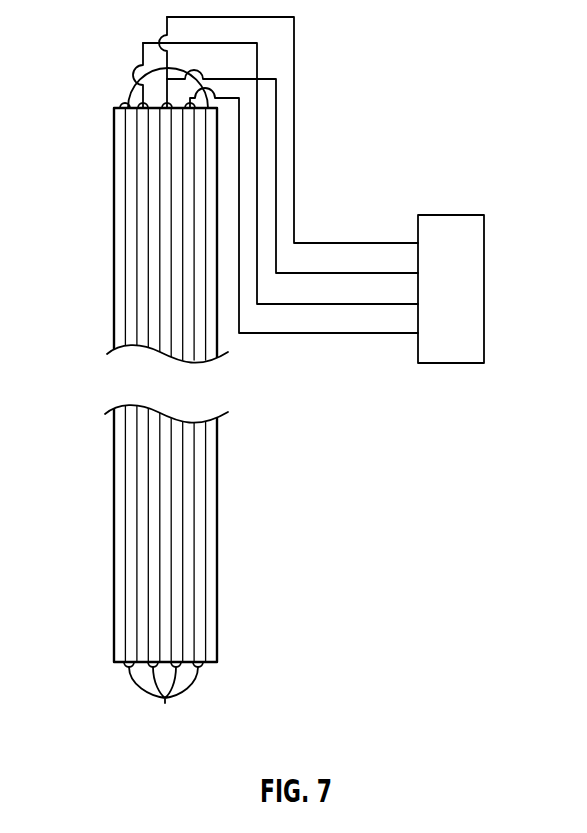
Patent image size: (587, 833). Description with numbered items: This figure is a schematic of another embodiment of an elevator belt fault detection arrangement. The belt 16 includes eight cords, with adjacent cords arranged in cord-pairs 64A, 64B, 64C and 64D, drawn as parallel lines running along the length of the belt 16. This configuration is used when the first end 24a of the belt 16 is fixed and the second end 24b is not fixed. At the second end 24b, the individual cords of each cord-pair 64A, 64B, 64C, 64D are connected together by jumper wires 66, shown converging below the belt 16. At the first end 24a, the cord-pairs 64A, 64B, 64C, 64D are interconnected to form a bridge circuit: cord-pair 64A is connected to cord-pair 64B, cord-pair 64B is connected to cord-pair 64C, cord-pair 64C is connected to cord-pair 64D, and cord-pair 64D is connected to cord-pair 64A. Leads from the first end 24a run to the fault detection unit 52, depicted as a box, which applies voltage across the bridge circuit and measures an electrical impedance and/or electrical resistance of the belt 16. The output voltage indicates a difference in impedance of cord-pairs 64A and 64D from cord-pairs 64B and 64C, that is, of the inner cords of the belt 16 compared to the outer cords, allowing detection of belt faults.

The belt 16 is at (129, 385).
The first end 24a is at (123, 106).
The second end 24b is at (122, 665).
The fault detection unit 52 is at (468, 215).
The cord-pair 64A is at (127, 248).
The cord-pair 64B is at (147, 290).
The cord-pair 64C is at (172, 492).
The cord-pair 64D is at (193, 535).
The jumper wires 66 is at (163, 700).